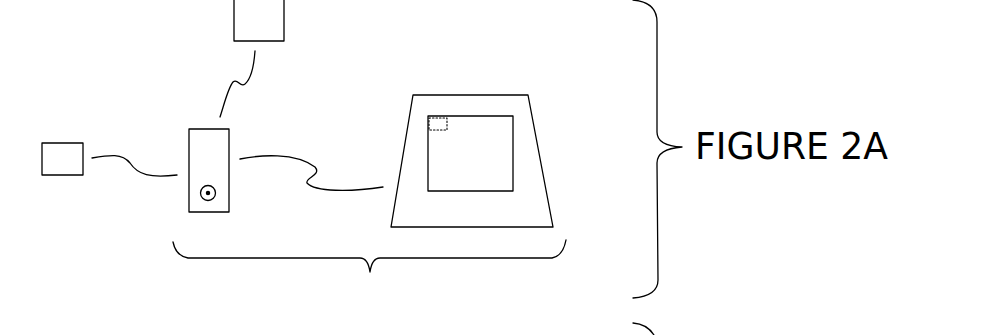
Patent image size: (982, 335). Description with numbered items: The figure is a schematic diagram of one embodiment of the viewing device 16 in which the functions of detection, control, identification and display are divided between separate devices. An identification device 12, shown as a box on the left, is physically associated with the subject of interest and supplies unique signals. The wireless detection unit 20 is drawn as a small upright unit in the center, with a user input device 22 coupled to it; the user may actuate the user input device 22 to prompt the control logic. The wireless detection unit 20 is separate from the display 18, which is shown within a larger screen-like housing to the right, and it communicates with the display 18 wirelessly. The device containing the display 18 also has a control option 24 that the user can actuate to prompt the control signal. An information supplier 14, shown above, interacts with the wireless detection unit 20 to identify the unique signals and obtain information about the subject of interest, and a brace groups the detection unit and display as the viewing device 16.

The identification device 12 is at (62, 180).
The information supplier 14 is at (291, 15).
The viewing device 16 is at (369, 273).
The display 18 is at (488, 140).
The wireless detection unit 20 is at (235, 217).
The user input device 22 is at (200, 193).
The control option 24 is at (438, 115).